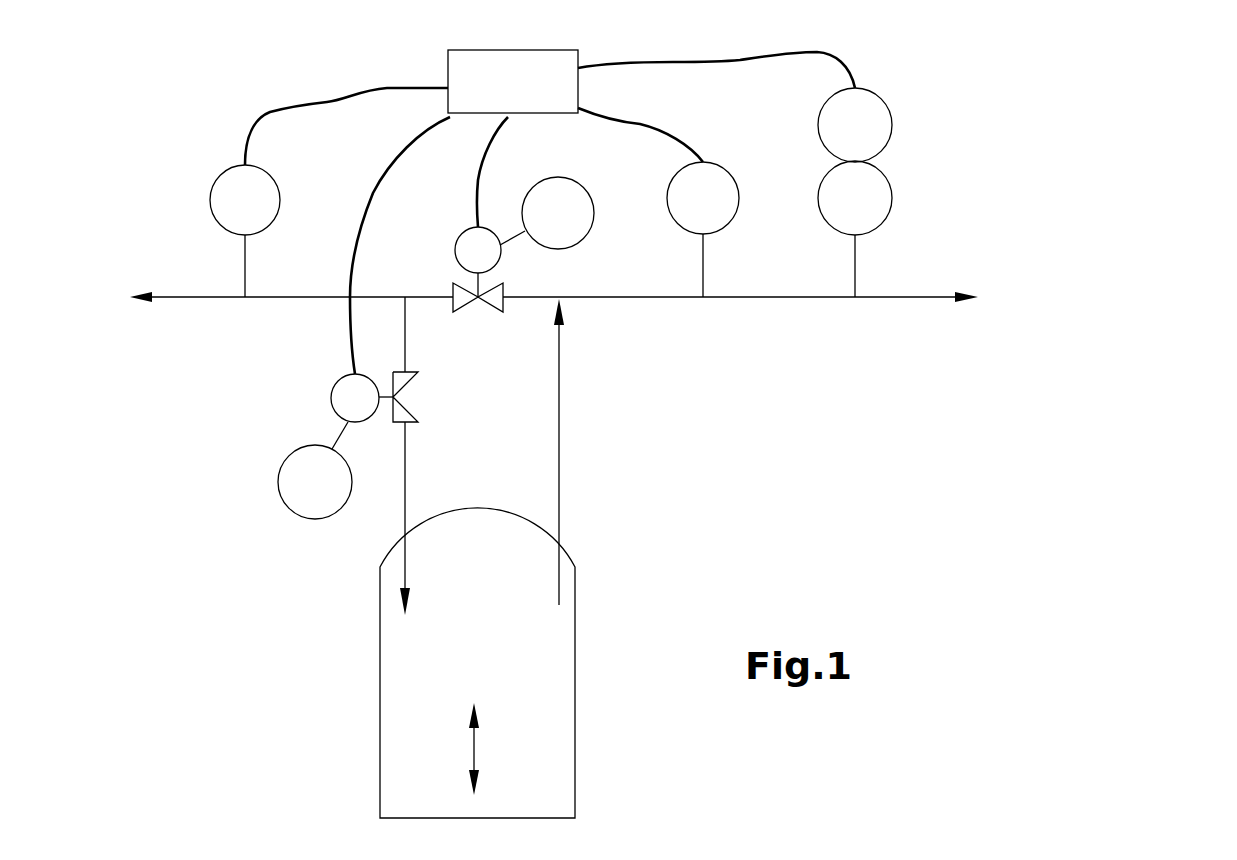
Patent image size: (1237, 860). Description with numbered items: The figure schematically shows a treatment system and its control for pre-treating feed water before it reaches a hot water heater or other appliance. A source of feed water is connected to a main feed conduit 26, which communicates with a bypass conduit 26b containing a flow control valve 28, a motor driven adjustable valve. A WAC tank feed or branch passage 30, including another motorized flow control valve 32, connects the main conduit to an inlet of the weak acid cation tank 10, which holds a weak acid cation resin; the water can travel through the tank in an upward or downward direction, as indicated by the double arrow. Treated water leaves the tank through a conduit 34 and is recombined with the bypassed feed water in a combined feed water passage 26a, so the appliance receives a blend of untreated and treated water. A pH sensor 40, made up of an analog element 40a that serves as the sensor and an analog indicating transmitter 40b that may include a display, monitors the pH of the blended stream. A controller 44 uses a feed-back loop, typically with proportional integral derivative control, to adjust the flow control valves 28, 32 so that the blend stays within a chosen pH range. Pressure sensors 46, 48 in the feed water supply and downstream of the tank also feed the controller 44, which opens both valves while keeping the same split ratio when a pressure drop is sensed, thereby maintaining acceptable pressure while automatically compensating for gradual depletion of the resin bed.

The tank 10 is at (560, 693).
The main feed conduit 26 is at (257, 299).
The combined feed water passage 26a is at (610, 299).
The bypass conduit 26b is at (523, 297).
The flow control valve 28 is at (461, 236).
The WAC tank feed passage 30 is at (405, 471).
The flow control valve 32 is at (340, 377).
The conduit 34 is at (559, 459).
The pH sensor 40 is at (909, 173).
The analog element 40a is at (885, 101).
The analog indicating transmitter 40b is at (892, 208).
The controller 44 is at (532, 49).
The pressure sensor 46 is at (214, 185).
The pressure sensor 48 is at (730, 175).